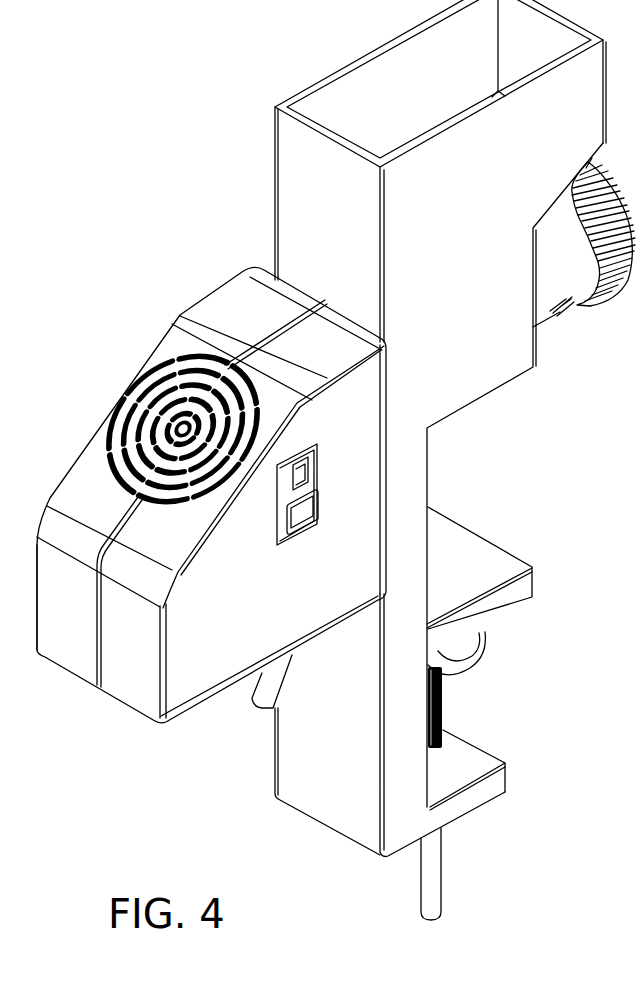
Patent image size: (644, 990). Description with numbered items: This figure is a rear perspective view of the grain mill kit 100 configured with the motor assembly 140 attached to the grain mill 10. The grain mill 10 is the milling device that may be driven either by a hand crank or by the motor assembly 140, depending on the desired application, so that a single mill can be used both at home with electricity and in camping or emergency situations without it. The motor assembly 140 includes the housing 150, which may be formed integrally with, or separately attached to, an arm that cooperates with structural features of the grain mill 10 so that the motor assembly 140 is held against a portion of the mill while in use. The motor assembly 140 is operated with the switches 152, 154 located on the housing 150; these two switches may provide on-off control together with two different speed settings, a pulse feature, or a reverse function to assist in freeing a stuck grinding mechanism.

The grain mill kit 100 is at (251, 70).
The grain mill 10 is at (462, 412).
The motor assembly 140 is at (82, 402).
The housing 150 is at (135, 680).
The switch 152 is at (303, 458).
The switch 154 is at (285, 520).